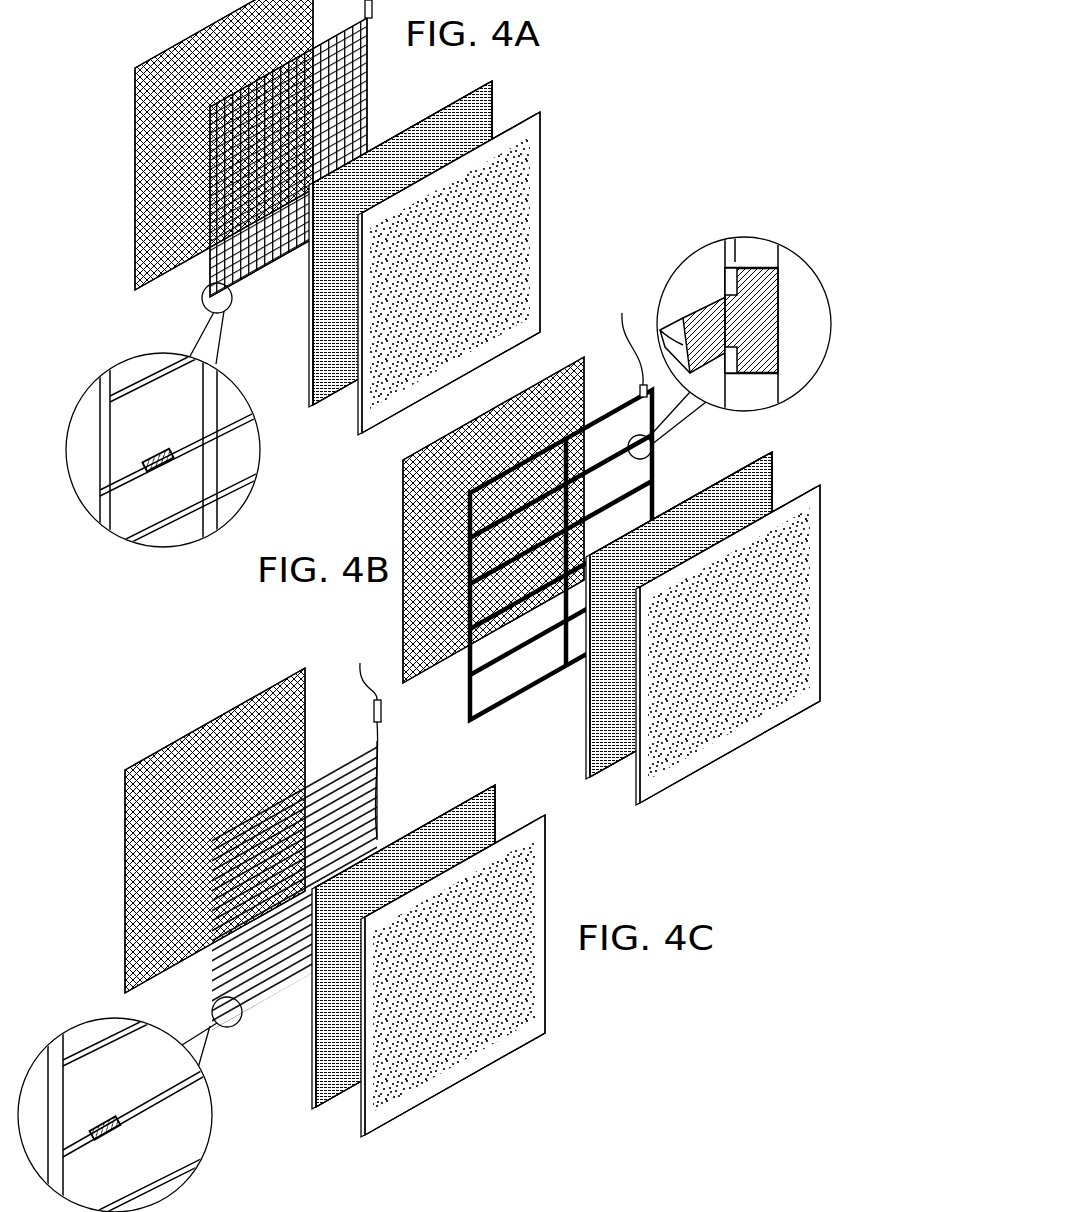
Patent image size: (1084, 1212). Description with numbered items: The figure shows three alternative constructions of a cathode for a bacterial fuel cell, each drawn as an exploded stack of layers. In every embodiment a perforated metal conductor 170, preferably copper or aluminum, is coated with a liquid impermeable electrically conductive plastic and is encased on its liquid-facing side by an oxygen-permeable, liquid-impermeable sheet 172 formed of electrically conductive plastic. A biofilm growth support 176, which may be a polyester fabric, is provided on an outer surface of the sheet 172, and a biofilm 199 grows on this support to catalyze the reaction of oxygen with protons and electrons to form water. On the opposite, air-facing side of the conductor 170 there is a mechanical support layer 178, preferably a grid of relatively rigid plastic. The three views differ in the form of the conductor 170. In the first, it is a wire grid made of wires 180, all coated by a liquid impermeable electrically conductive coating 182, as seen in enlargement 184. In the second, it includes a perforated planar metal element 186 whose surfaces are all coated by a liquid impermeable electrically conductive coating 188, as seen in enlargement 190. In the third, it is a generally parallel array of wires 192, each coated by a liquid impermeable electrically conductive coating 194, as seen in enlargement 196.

In FIG. 4A, the perforated metal conductor 170 is at (357, 93).
In FIG. 4B, the perforated metal conductor 170 is at (650, 472).
In FIG. 4C, the perforated metal conductor 170 is at (378, 768).
In FIG. 4A, the oxygen-permeable, liquid-impermeable sheet 172 is at (494, 102).
In FIG. 4B, the oxygen-permeable, liquid-impermeable sheet 172 is at (776, 468).
In FIG. 4C, the oxygen-permeable, liquid-impermeable sheet 172 is at (498, 803).
In FIG. 4A, the biofilm growth support 176 is at (484, 273).
In FIG. 4B, the biofilm growth support 176 is at (728, 660).
In FIG. 4C, the biofilm growth support 176 is at (453, 988).
In FIG. 4A, the mechanical support layer 178 is at (197, 68).
In FIG. 4B, the mechanical support layer 178 is at (405, 520).
In FIG. 4C, the mechanical support layer 178 is at (178, 756).
In FIG. 4A, the biofilm 199 is at (505, 205).
In FIG. 4B, the biofilm 199 is at (740, 700).
In FIG. 4C, the biofilm 199 is at (470, 1020).
In FIG. 4A, the wires 180 is at (157, 468).
In FIG. 4A, the liquid impermeable electrically conductive coating 182 is at (170, 447).
In FIG. 4A, the enlargement 184 is at (175, 420).
In FIG. 4B, the perforated planar metal element 186 is at (720, 325).
In FIG. 4B, the liquid impermeable electrically conductive coating 188 is at (753, 247).
In FIG. 4B, the enlargement 190 is at (655, 296).
In FIG. 4C, the wires 192 is at (106, 1132).
In FIG. 4C, the liquid impermeable electrically conductive coating 194 is at (150, 1100).
In FIG. 4C, the enlargement 196 is at (155, 1098).